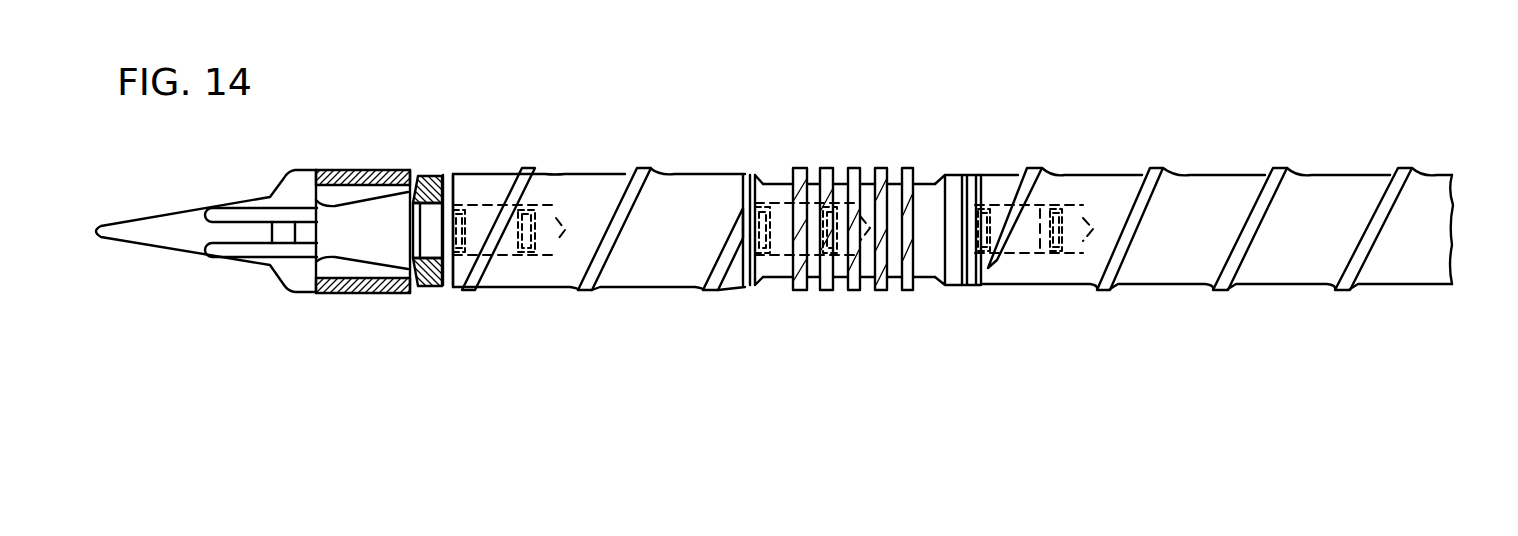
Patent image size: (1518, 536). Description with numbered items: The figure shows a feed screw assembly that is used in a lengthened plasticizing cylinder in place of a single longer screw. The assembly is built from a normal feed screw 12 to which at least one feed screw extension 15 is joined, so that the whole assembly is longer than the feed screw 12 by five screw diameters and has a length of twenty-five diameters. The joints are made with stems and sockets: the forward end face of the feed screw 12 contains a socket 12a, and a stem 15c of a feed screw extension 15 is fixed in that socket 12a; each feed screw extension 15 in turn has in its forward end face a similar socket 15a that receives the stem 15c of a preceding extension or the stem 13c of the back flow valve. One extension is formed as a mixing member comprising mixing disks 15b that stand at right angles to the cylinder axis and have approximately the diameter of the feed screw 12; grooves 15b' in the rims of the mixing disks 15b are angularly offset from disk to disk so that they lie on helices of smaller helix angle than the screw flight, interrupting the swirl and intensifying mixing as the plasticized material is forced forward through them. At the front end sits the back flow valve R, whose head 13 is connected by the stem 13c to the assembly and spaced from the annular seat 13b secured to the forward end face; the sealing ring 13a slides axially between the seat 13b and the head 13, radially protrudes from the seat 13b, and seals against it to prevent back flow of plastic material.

The feed screw 12 is at (1323, 205).
The socket 12a is at (1048, 205).
The head 13 is at (243, 252).
The sealing ring 13a is at (386, 294).
The annular seat 13b is at (433, 283).
The stem 13c is at (456, 205).
The feed screw extension 15 is at (642, 262).
The socket 15a is at (484, 205).
The mixing disks 15b is at (846, 269).
The grooves 15b' is at (905, 182).
The stem 15c is at (780, 258).
The back flow valve R is at (320, 298).